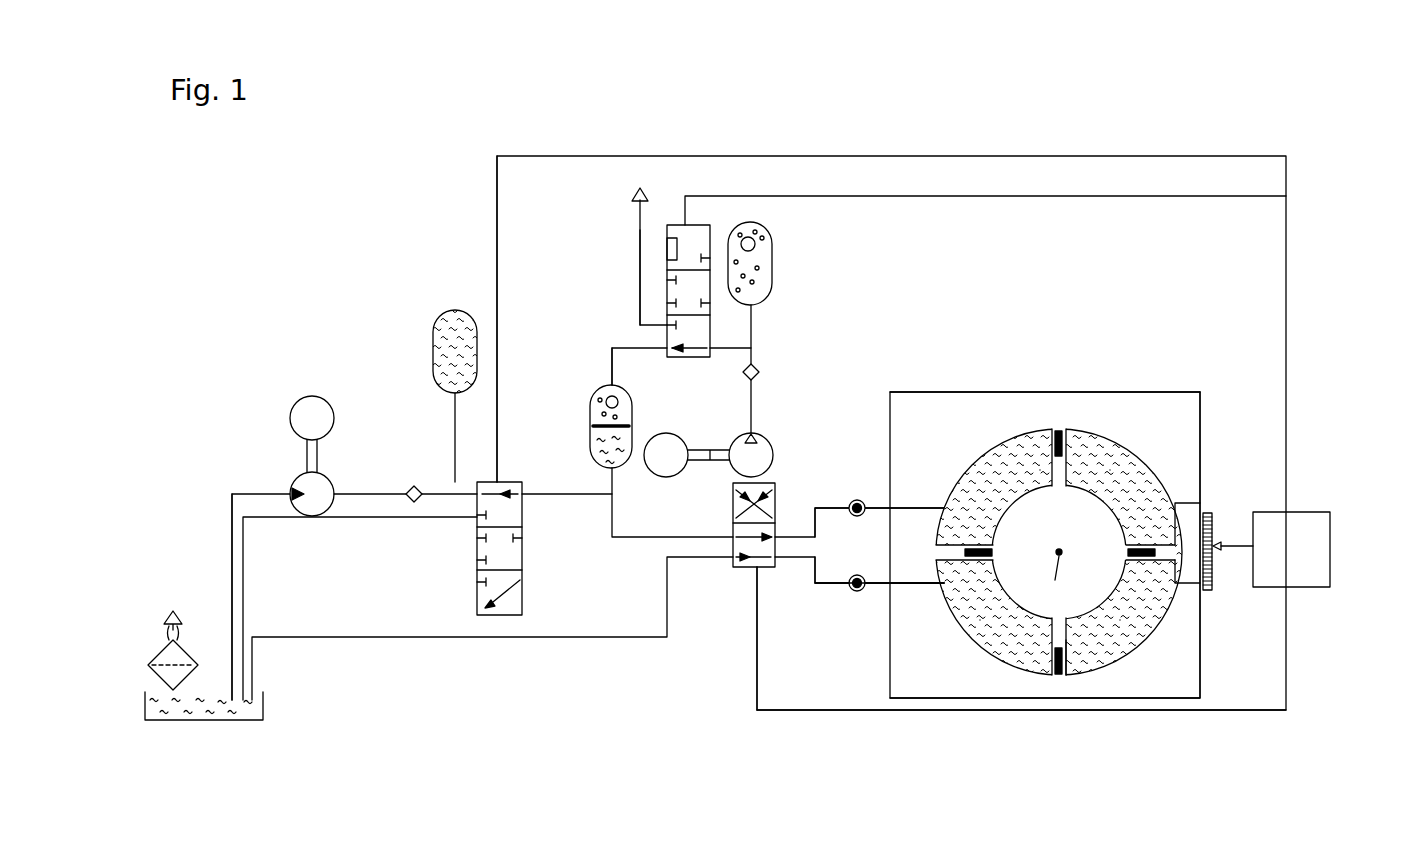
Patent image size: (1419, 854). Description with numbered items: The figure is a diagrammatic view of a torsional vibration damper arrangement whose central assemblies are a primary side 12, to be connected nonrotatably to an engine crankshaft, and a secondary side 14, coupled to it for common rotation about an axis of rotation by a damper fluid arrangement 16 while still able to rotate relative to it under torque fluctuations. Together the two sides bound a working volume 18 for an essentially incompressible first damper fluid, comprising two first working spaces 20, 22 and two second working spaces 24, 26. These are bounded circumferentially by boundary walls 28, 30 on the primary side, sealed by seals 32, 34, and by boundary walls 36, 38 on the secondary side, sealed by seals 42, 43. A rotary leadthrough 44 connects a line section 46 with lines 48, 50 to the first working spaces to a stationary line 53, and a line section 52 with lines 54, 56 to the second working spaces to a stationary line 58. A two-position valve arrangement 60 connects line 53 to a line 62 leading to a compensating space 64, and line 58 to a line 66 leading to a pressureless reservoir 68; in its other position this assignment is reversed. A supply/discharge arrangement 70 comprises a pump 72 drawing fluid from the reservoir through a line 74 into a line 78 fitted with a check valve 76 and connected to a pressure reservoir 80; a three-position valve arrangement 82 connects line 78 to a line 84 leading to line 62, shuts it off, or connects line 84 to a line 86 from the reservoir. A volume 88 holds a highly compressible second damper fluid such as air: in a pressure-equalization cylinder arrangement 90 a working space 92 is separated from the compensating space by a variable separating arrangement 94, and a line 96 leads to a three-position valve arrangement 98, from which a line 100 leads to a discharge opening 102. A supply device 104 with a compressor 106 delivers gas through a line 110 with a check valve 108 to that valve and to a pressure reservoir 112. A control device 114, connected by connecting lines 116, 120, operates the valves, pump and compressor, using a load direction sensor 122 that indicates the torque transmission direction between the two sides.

The primary side 12 is at (1037, 429).
The secondary side 14 is at (1045, 678).
The damper fluid arrangement 16 is at (1008, 457).
The working volume 18 is at (1173, 473).
The first working space 20 is at (898, 448).
The first working space 22 is at (1137, 632).
The second working space 24 is at (1177, 503).
The second working space 26 is at (953, 561).
The boundary wall 28 is at (918, 587).
The boundary wall 30 is at (1167, 548).
The seal 32 is at (985, 562).
The seal 34 is at (1150, 547).
The boundary wall 36 is at (1137, 468).
The boundary wall 38 is at (1065, 644).
The seal 42 is at (1062, 474).
The seal 43 is at (1060, 678).
The rotary leadthrough 44 is at (800, 573).
The line section 46 is at (857, 498).
The line 48 is at (908, 510).
The line 50 is at (1027, 393).
The line section 52 is at (857, 595).
The line 53 is at (795, 534).
The line 54 is at (875, 605).
The line 56 is at (1200, 670).
The line 58 is at (816, 588).
The valve arrangement 60 is at (733, 520).
The line 62 is at (630, 540).
The compensating space 64 is at (593, 448).
The line 66 is at (597, 640).
The reservoir 68 is at (265, 708).
The supply/discharge arrangement 70 is at (333, 333).
The pump 72 is at (292, 452).
The line 74 is at (232, 505).
The check valve 76 is at (414, 486).
The line 78 is at (357, 490).
The pressure reservoir 80 is at (433, 335).
The valve arrangement 82 is at (510, 618).
The line 84 is at (560, 496).
The line 86 is at (392, 519).
The volume 88 is at (607, 293).
The pressure-equalization cylinder arrangement 90 is at (588, 400).
The working space 92 is at (617, 398).
The variable separating arrangement 94 is at (634, 425).
The line 96 is at (612, 348).
The valve arrangement 98 is at (672, 224).
The line 100 is at (638, 243).
The discharge opening 102 is at (640, 188).
The supply device 104 is at (767, 320).
The compressor 106 is at (760, 427).
The check valve 108 is at (760, 358).
The line 110 is at (735, 352).
The pressure reservoir 112 is at (751, 222).
The control device 114 is at (1325, 588).
The connecting line 116 is at (1185, 712).
The connecting line 120 is at (1117, 196).
The load direction sensor 122 is at (1213, 523).